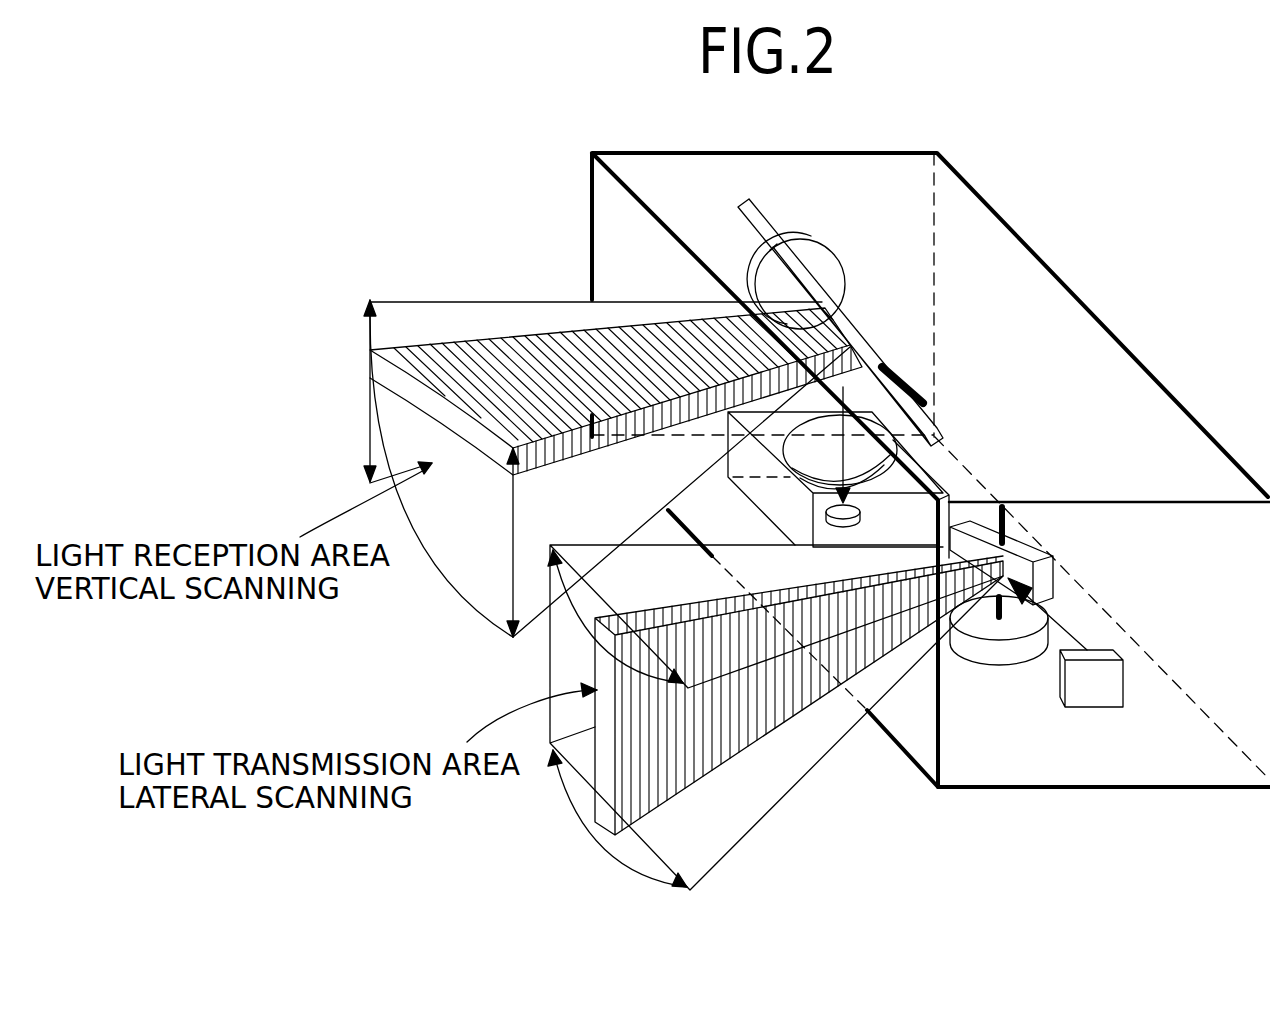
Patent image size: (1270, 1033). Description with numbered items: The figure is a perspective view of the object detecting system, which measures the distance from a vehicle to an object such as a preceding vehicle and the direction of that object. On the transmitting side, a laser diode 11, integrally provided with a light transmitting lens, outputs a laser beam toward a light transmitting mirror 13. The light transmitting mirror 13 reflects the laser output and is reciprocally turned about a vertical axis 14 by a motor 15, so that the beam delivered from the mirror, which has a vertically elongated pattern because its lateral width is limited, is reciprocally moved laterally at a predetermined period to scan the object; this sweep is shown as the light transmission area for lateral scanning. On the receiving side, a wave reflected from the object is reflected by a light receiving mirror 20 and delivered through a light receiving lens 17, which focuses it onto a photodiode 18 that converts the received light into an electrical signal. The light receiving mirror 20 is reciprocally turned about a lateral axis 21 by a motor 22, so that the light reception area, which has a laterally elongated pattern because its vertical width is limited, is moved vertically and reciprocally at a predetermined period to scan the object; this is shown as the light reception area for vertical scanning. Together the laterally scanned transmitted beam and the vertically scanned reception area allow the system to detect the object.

The laser diode 11 is at (1087, 693).
The light transmitting mirror 13 is at (1045, 577).
The vertical axis 14 is at (1007, 518).
The motor 15 is at (993, 653).
The light receiving lens 17 is at (958, 464).
The photodiode 18 is at (833, 510).
The light receiving mirror 20 is at (765, 223).
The lateral axis 21 is at (910, 385).
The motor 22 is at (830, 270).